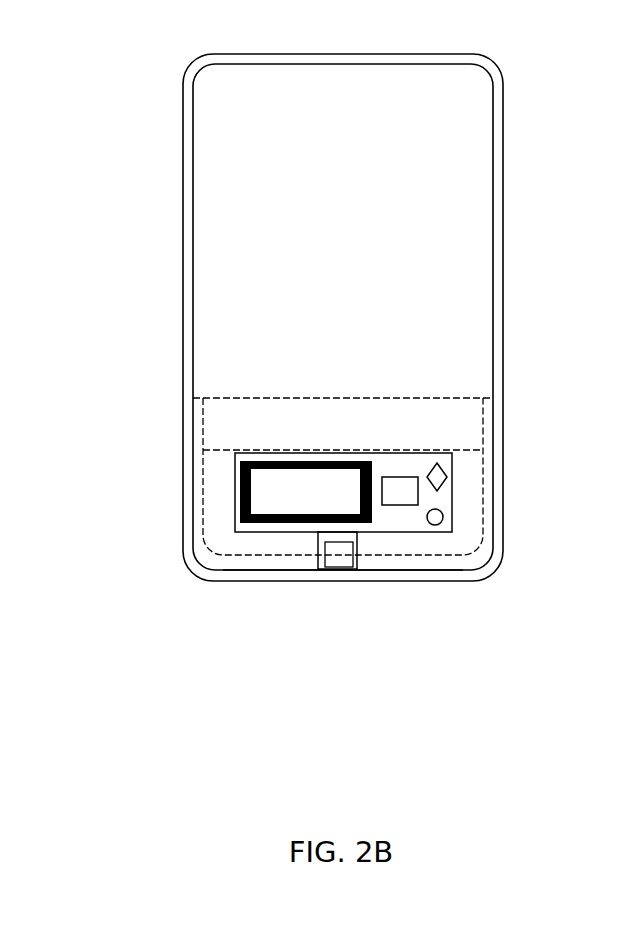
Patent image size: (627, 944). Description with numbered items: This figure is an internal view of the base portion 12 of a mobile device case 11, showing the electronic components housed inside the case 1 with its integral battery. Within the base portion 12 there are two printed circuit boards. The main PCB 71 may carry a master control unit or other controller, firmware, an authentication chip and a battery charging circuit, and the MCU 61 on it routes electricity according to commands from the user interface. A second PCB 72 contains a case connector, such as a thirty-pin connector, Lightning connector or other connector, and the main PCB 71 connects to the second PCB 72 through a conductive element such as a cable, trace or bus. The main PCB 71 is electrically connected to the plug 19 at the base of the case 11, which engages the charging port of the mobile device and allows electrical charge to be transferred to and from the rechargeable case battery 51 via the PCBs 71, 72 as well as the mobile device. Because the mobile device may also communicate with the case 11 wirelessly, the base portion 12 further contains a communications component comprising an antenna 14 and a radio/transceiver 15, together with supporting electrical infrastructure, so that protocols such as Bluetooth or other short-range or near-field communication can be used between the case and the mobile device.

The portable terminal device 1 is at (307, 317).
The mobile device case 11 is at (463, 168).
The base portion 12 is at (213, 513).
The antenna 14 is at (448, 474).
The radio/transceiver 15 is at (447, 522).
The plug 19 is at (320, 567).
The case battery 51 is at (240, 497).
The MCU 61 is at (418, 477).
The main PCB 71 is at (400, 523).
The second PCB 72 is at (348, 562).